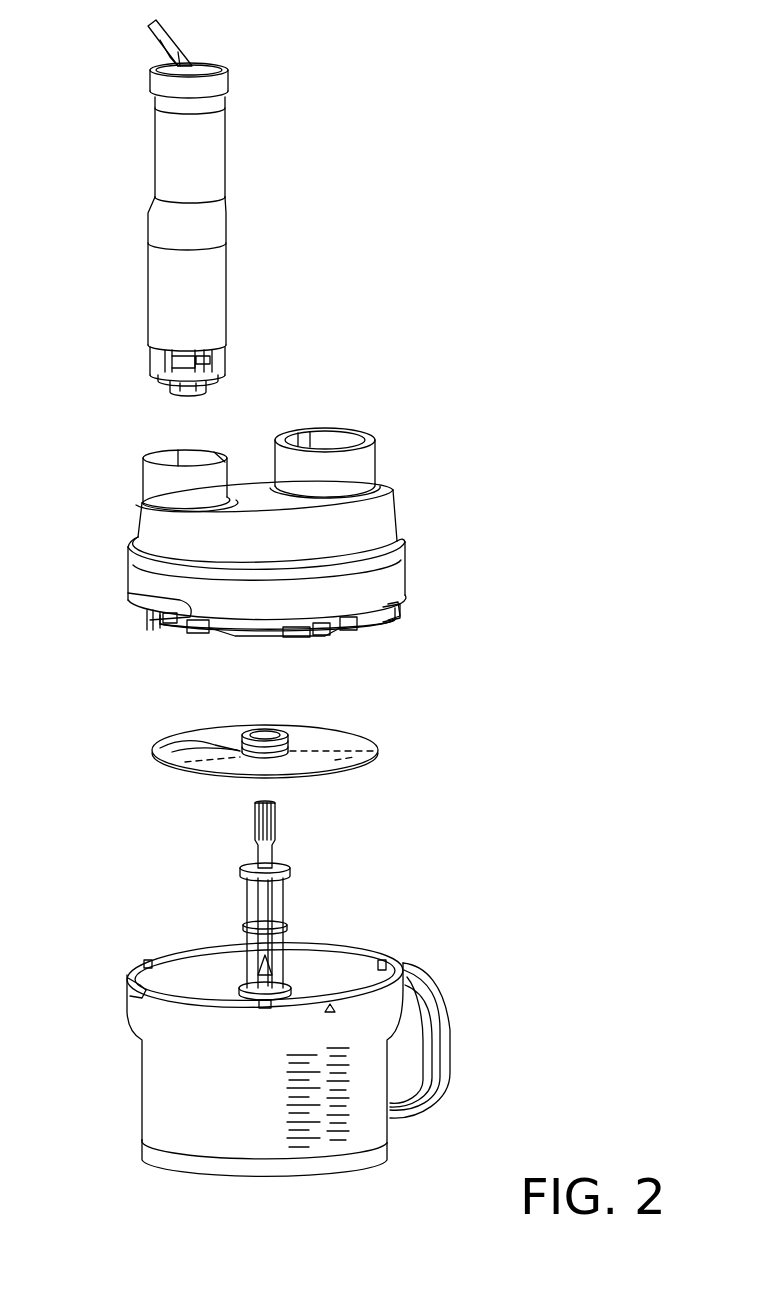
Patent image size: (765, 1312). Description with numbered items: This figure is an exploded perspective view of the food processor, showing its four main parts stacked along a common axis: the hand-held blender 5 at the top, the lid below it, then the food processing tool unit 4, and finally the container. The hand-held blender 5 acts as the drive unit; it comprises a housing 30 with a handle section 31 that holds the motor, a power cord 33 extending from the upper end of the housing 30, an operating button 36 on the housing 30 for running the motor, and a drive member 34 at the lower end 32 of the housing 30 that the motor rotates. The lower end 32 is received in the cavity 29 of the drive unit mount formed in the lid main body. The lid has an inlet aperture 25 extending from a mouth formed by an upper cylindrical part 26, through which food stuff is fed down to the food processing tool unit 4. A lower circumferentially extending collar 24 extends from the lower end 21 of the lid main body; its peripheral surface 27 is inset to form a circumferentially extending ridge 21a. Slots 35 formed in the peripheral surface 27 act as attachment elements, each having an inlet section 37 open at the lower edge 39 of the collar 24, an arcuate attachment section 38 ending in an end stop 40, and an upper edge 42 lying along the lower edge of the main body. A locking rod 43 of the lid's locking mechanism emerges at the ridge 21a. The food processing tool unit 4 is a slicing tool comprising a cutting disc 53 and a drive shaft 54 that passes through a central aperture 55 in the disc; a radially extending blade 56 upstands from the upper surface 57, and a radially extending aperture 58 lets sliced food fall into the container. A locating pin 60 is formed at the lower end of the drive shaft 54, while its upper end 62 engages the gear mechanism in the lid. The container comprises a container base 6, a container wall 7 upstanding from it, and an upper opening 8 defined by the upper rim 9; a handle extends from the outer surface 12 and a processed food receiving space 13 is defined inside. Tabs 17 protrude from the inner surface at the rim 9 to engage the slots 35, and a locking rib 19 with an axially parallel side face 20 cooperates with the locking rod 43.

The food processing tool unit 4 is at (490, 763).
The hand-held blender 5 is at (232, 122).
The container base 6 is at (148, 1168).
The container wall 7 is at (140, 1112).
The upper opening 8 is at (338, 961).
The upper rim 9 is at (200, 951).
The outer surface 12 is at (142, 1068).
The processed food receiving space 13 is at (210, 1148).
The tabs 17 is at (385, 966).
The locking rib 19 is at (130, 978).
The side face 20 is at (128, 993).
The lower end 21 is at (400, 570).
The ridge 21a is at (247, 632).
The collar 24 is at (380, 626).
The inlet aperture 25 is at (345, 438).
The upper cylindrical part 26 is at (255, 485).
The peripheral surface 27 is at (398, 618).
The cavity 29 is at (175, 453).
The housing 30 is at (208, 218).
The handle section 31 is at (170, 148).
The lower end 32 is at (160, 357).
The power cord 33 is at (168, 38).
The drive member 34 is at (213, 385).
The slots 35 is at (195, 628).
The operating button 36 is at (228, 300).
The inlet section 37 is at (205, 637).
The attachment section 38 is at (315, 635).
The lower edge 39 is at (377, 620).
The end stop 40 is at (285, 637).
The upper edge 42 is at (180, 603).
The locking rod 43 is at (152, 635).
The cutting disc 53 is at (370, 745).
The drive shaft 54 is at (255, 885).
The central aperture 55 is at (292, 752).
The blade 56 is at (195, 740).
The upper surface 57 is at (375, 757).
The radially extending aperture 58 is at (210, 752).
The locating pin 60 is at (268, 1010).
The upper end 62 is at (278, 820).